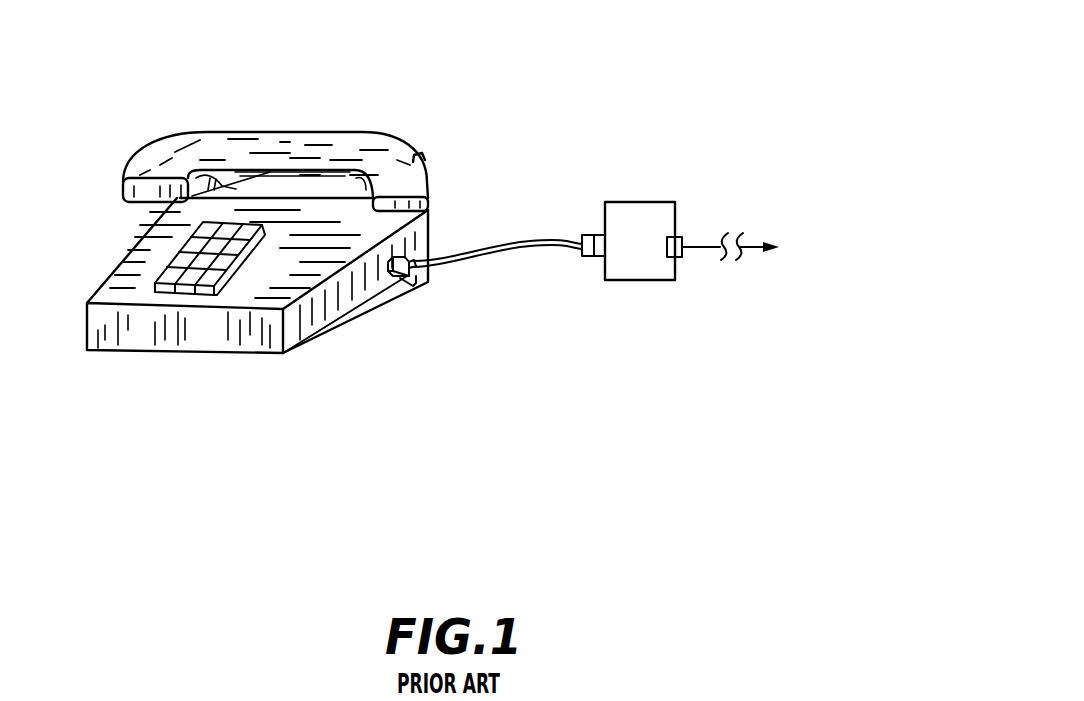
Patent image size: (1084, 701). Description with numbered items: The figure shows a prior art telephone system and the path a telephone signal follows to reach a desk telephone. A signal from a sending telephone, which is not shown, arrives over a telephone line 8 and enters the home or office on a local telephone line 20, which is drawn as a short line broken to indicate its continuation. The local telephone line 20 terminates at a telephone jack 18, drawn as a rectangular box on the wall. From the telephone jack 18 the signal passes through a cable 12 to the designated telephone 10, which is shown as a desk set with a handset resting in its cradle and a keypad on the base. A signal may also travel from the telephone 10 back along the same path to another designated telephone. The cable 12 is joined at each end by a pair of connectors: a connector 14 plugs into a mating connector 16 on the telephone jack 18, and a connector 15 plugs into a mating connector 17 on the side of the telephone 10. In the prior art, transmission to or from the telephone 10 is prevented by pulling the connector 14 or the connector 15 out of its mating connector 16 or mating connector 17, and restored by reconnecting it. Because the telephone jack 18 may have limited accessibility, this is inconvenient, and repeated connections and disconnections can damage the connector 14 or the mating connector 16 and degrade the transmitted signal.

The telephone line 8 is at (839, 247).
The telephone 10 is at (133, 335).
The cable 12 is at (509, 236).
The connector 14 is at (582, 226).
The connector 15 is at (413, 292).
The mating connector 16 is at (596, 226).
The mating connector 17 is at (366, 320).
The telephone jack 18 is at (621, 283).
The local telephone line 20 is at (708, 266).